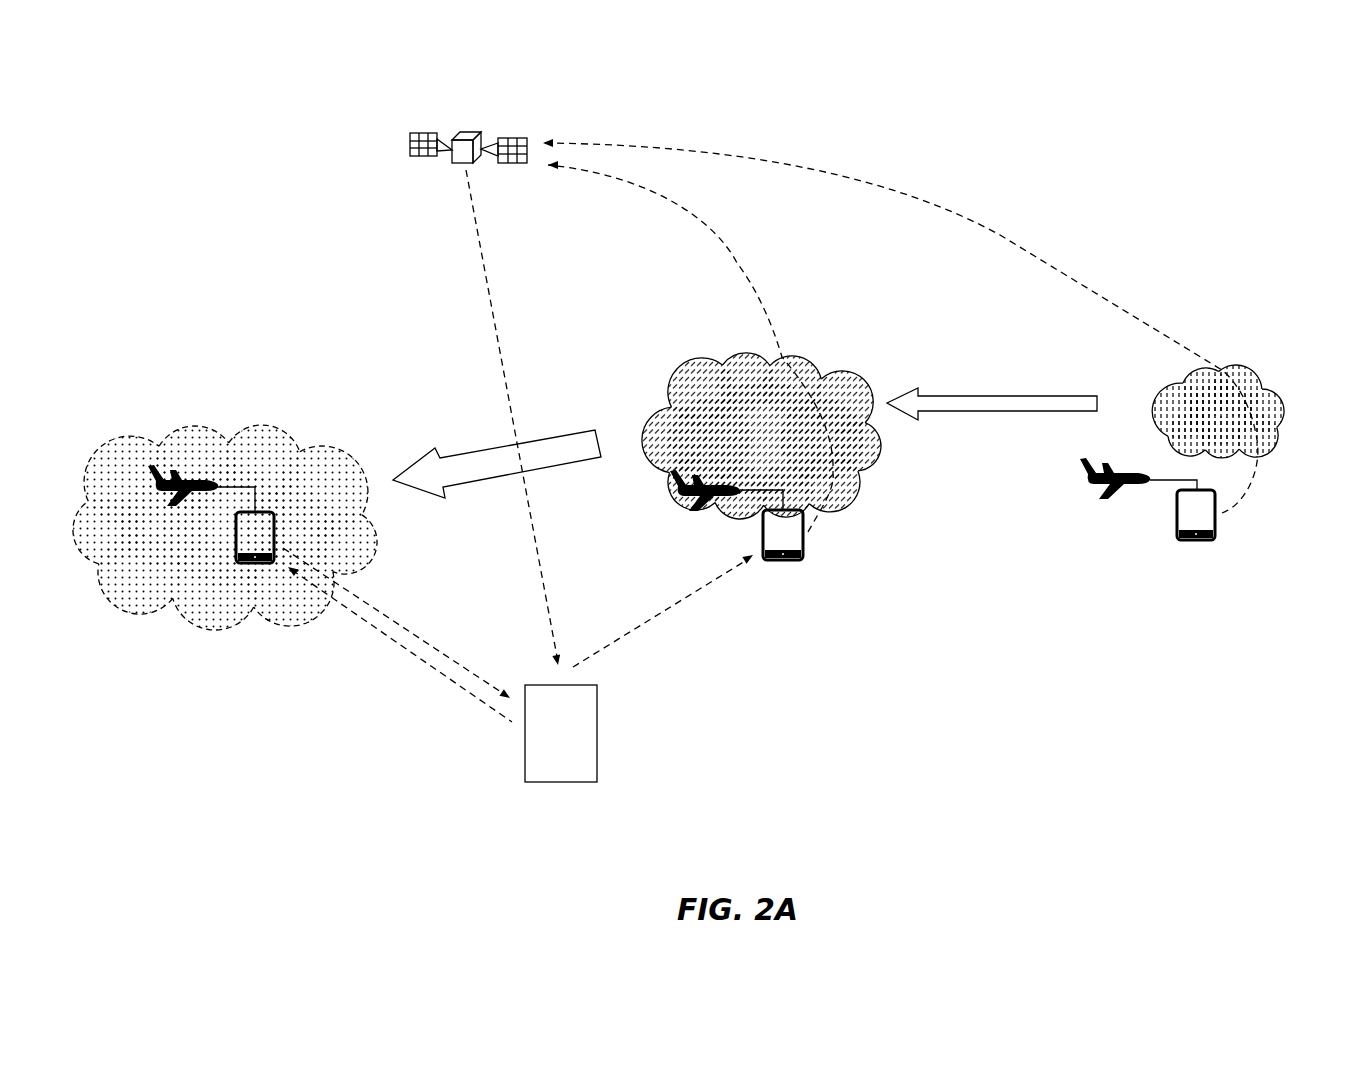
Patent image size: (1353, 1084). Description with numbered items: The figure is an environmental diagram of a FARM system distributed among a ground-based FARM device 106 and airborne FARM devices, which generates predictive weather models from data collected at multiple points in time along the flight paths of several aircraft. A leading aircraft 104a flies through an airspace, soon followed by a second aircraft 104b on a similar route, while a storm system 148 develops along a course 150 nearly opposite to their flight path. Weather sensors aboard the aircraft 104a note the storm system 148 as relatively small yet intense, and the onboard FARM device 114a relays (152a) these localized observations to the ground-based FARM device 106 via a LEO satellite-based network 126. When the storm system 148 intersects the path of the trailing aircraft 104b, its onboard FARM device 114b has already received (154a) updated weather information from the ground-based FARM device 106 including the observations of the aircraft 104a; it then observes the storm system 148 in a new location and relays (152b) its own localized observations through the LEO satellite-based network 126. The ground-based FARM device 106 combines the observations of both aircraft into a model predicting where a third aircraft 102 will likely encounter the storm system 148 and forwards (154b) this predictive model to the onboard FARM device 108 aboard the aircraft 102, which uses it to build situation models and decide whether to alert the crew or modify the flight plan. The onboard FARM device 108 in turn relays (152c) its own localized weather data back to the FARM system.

The aircraft 102 is at (180, 467).
The aircraft 104a is at (1117, 498).
The aircraft 104b is at (682, 503).
The ground-based FARM device 106 is at (561, 733).
The onboard FARM device 108 is at (252, 565).
The onboard FARM device 114a is at (1193, 540).
The onboard FARM device 114b is at (785, 560).
The LEO satellite-based network 126 is at (470, 130).
The storm system 148 is at (1258, 377).
The course 150 is at (948, 393).
The relay of localized weather observations 152a is at (923, 217).
The relay of localized weather observations 152b is at (737, 267).
The relay of localized weather data 152c is at (383, 605).
The receipt of updated weather information 154a is at (635, 627).
The forwarding of predictive weather model 154b is at (360, 628).